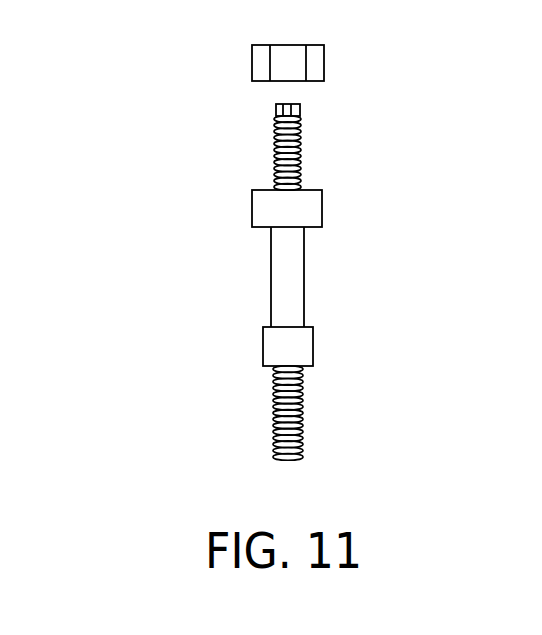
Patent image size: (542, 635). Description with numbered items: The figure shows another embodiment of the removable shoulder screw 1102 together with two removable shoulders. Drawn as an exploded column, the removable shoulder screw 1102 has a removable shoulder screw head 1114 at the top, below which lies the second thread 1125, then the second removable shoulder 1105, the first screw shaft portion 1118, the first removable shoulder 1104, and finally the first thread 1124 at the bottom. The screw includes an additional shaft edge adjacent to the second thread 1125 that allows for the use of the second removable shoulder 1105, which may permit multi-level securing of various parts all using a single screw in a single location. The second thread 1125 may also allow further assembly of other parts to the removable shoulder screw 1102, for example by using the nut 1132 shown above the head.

The removable shoulder screw 1102 is at (176, 142).
The nut 1132 is at (324, 53).
The removable shoulder screw head 1114 is at (300, 108).
The second thread 1125 is at (302, 158).
The second removable shoulder 1105 is at (323, 211).
The first screw shaft portion 1118 is at (282, 278).
The first removable shoulder 1104 is at (296, 346).
The first thread 1124 is at (303, 425).